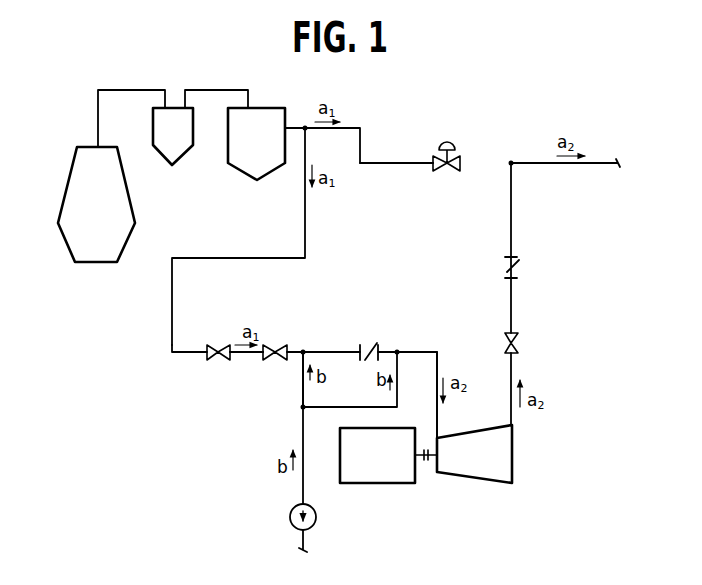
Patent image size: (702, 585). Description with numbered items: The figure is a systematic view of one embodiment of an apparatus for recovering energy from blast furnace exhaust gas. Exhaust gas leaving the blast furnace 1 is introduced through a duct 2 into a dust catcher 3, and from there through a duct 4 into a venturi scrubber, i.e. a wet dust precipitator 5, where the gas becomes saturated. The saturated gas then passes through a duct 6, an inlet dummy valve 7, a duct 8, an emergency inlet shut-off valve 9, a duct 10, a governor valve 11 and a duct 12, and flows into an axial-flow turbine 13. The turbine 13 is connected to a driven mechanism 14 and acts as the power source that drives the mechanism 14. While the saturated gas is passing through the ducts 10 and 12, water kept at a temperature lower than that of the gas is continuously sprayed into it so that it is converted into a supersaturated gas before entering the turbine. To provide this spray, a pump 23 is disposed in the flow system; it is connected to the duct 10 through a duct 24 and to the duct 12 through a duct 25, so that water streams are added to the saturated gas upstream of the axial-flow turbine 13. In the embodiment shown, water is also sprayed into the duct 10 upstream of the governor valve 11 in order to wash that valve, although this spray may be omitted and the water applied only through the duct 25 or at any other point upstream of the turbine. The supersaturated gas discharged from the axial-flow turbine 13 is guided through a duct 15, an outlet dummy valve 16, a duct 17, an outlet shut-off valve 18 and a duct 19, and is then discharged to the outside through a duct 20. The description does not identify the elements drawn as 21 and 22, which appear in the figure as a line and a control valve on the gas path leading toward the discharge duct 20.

The blast furnace 1 is at (117, 187).
The duct 2 is at (143, 90).
The dust catcher 3 is at (183, 155).
The duct 4 is at (223, 90).
The wet dust precipitator 5 is at (245, 178).
The duct 6 is at (305, 223).
The inlet dummy valve 7 is at (213, 358).
The duct 8 is at (238, 353).
The emergency inlet shut-off valve 9 is at (270, 358).
The duct 10 is at (343, 350).
The governor valve 11 is at (367, 352).
The duct 12 is at (405, 350).
The axial-flow turbine 13 is at (512, 465).
The driven mechanism 14 is at (390, 485).
The duct 15 is at (512, 418).
The outlet dummy valve 16 is at (518, 340).
The duct 17 is at (512, 308).
The outlet shut-off valve 18 is at (518, 270).
The duct 19 is at (512, 245).
The duct 20 is at (568, 167).
The connecting line 21 is at (407, 165).
The pressure control valve 22 is at (450, 175).
The pump 23 is at (290, 508).
The duct 24 is at (298, 398).
The duct 25 is at (320, 408).